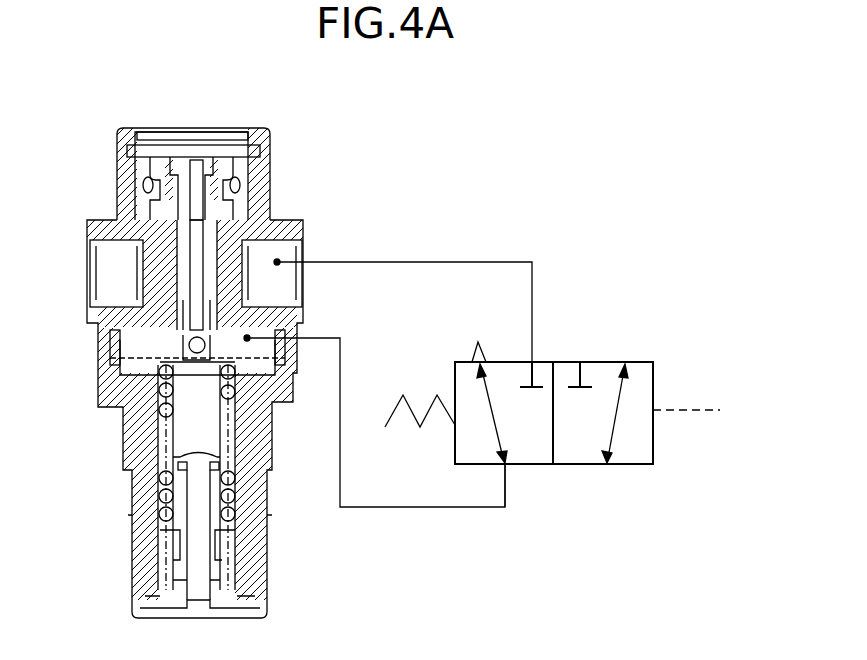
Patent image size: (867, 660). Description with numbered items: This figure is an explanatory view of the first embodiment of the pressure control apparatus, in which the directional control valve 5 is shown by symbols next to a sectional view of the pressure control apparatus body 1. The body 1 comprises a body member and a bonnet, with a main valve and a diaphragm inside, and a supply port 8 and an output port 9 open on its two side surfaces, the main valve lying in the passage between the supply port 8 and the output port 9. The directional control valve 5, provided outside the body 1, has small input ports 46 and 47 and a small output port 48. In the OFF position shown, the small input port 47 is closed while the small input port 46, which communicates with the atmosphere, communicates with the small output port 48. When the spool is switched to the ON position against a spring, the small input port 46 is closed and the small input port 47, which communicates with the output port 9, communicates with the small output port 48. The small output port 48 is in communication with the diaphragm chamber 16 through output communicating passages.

The pressure control apparatus body 1 is at (272, 132).
The supply port 8 is at (100, 288).
The output port 9 is at (290, 288).
The diaphragm chamber 16 is at (143, 340).
The directional control valve 5 is at (662, 352).
The small input port 46 is at (482, 352).
The small input port 47 is at (535, 350).
The small output port 48 is at (505, 470).